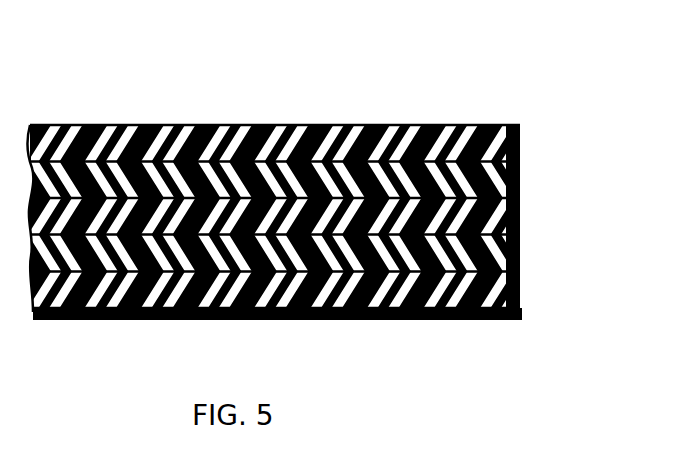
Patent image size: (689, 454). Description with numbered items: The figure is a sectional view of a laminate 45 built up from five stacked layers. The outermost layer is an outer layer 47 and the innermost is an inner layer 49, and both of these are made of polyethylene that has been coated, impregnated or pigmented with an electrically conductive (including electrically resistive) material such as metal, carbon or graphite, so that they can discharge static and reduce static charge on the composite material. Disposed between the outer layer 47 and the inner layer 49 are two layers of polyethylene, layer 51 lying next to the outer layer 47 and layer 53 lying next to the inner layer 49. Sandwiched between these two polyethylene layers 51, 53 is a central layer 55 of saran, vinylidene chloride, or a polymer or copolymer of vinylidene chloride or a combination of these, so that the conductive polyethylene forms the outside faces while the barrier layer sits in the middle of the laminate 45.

The laminate 45 is at (308, 175).
The outer layer 47 is at (506, 128).
The layer of polyethylene 51 is at (514, 177).
The layer of saran or vinylidene chloride 55 is at (518, 224).
The layer of polyethylene 53 is at (517, 273).
The inner layer 49 is at (517, 293).